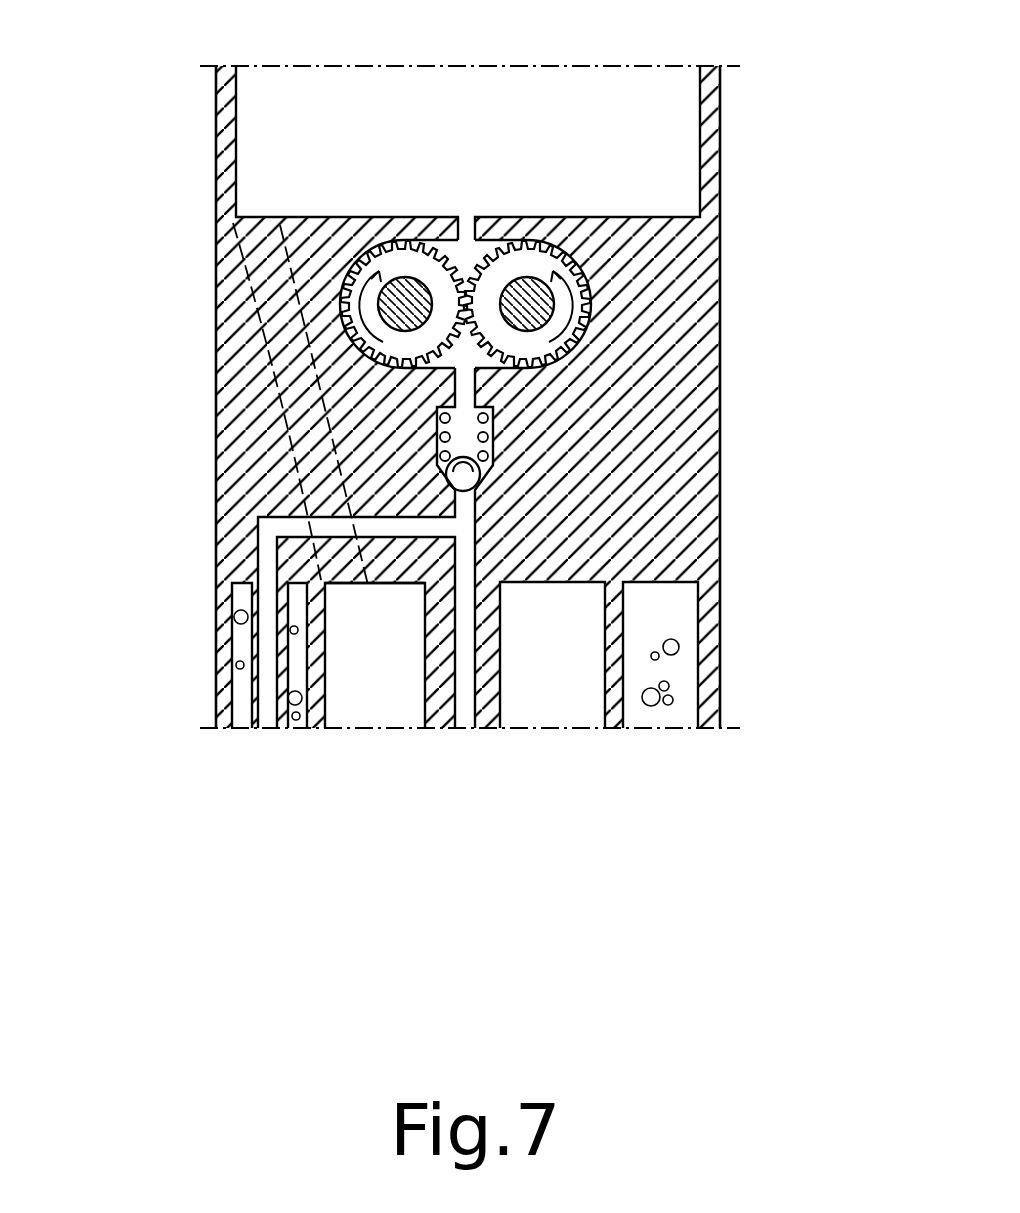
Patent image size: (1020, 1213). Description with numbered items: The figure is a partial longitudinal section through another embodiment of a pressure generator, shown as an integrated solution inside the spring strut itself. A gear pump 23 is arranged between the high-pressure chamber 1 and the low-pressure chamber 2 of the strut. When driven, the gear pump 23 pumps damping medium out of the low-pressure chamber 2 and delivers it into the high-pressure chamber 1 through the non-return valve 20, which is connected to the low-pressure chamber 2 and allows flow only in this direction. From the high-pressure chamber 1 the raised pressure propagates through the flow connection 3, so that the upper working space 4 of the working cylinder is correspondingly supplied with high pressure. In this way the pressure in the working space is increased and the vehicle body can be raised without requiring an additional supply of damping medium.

The high-pressure chamber 1 is at (645, 118).
The low-pressure chamber 2 is at (665, 623).
The flow connection 3 is at (263, 273).
The upper working space 4 is at (355, 658).
The non-return valve 20 is at (462, 478).
The gear pump 23 is at (462, 357).